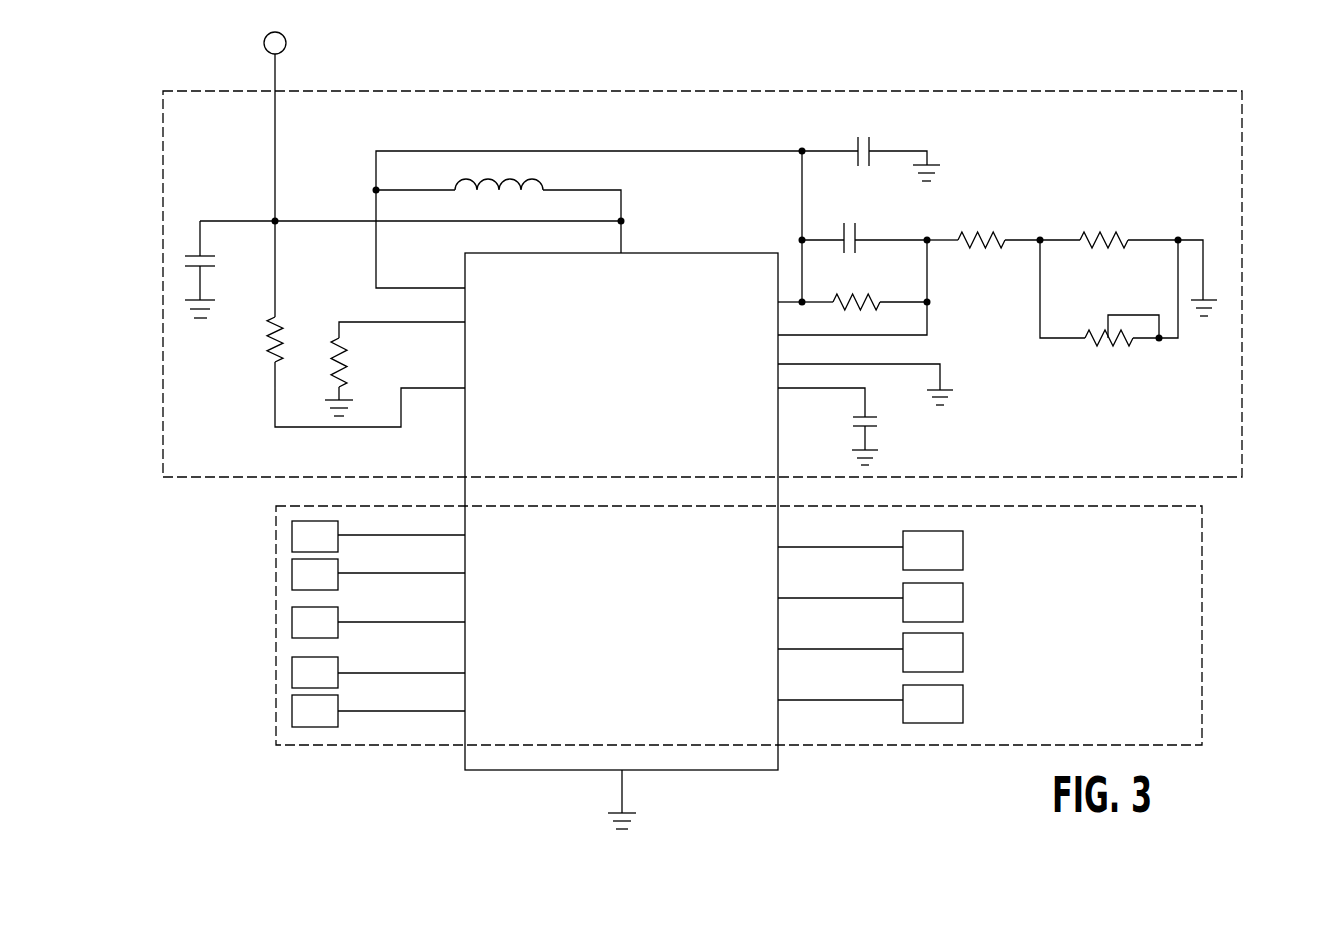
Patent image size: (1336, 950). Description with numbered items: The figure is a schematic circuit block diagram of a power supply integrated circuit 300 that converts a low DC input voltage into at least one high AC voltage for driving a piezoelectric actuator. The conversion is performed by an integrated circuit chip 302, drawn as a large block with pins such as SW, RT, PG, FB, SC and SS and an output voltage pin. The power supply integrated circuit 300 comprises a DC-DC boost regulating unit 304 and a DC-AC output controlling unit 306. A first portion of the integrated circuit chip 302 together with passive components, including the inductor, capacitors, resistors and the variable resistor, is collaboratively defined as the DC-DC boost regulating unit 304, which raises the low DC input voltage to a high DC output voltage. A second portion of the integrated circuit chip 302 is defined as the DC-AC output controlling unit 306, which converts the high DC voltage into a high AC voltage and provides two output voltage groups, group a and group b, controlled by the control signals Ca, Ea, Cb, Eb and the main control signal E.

The power supply integrated circuit 300 is at (712, 427).
The integrated circuit chip 302 is at (745, 770).
The DC-DC boost regulating unit 304 is at (163, 282).
The DC-AC output controlling unit 306 is at (276, 622).